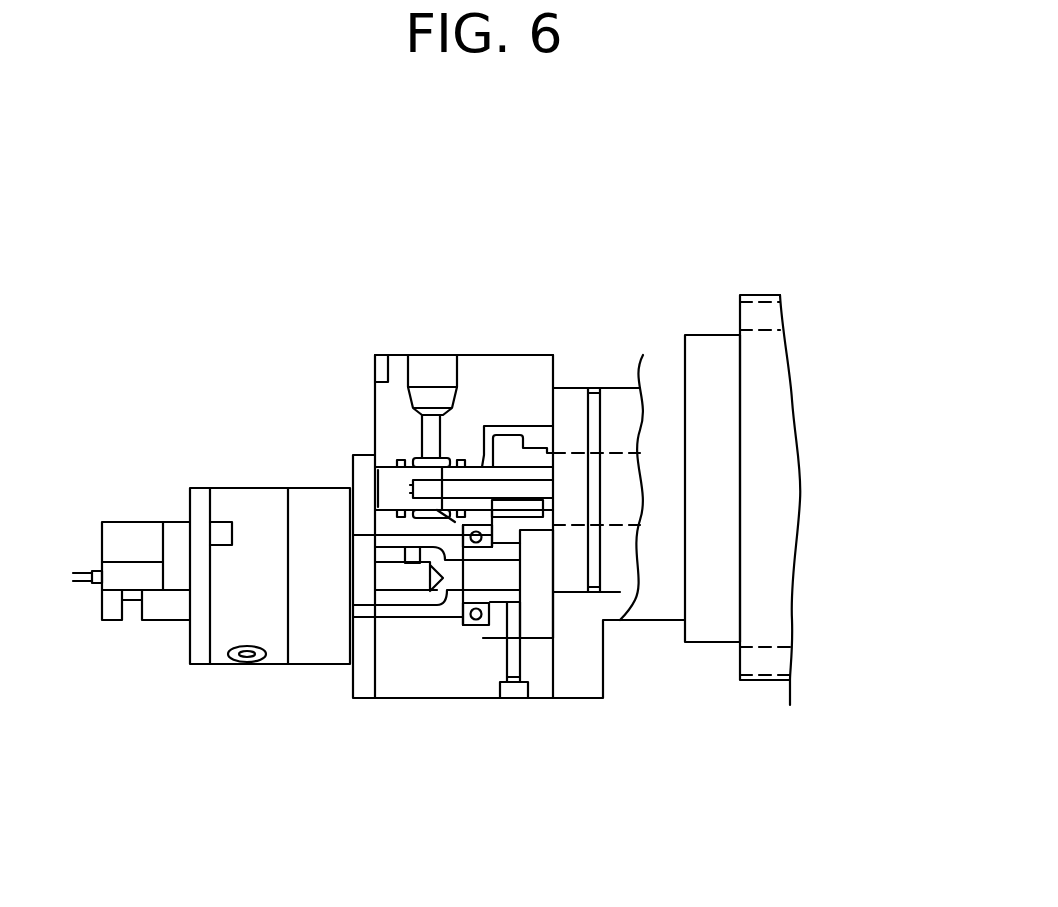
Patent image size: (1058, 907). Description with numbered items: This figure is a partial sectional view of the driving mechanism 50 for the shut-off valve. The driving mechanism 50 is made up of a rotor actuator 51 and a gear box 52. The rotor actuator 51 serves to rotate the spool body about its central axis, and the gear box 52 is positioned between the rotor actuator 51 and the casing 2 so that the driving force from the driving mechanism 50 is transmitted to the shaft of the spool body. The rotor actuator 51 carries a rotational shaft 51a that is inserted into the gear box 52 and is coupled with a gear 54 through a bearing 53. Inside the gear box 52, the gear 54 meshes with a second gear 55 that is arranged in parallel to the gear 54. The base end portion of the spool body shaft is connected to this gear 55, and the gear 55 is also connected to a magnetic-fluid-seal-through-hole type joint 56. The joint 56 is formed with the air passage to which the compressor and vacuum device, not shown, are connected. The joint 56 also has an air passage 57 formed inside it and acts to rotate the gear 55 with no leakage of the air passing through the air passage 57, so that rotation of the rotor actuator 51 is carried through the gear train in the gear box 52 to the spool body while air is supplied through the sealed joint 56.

The casing 2 is at (760, 295).
The driving mechanism 50 is at (430, 240).
The rotor actuator 51 is at (236, 488).
The rotational shaft 51a is at (392, 585).
The gear box 52 is at (410, 700).
The bearing 53 is at (466, 627).
The gear 54 is at (499, 612).
The gear 55 is at (505, 430).
The magnetic-fluid-seal-through-hole type joint 56 is at (469, 433).
The air passage 57 is at (423, 433).